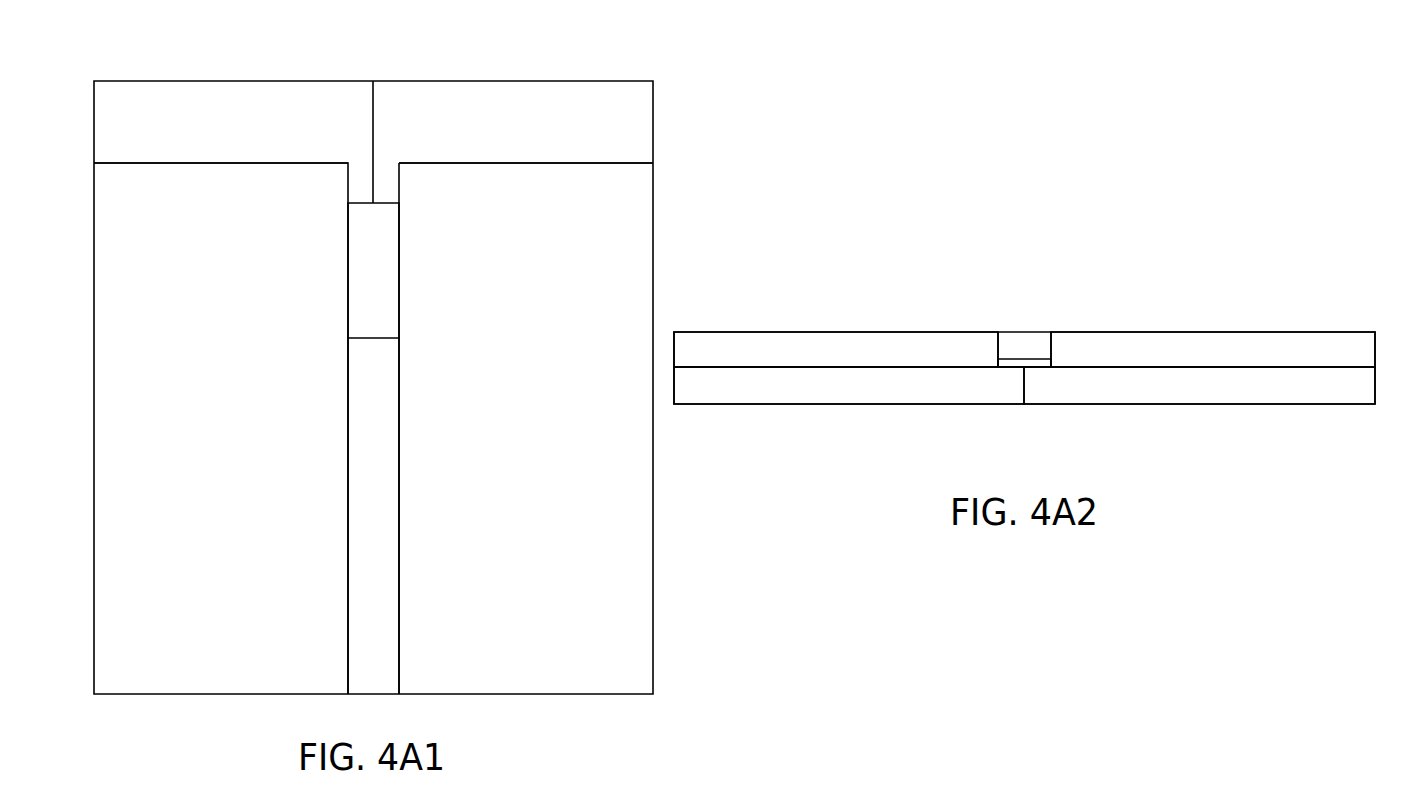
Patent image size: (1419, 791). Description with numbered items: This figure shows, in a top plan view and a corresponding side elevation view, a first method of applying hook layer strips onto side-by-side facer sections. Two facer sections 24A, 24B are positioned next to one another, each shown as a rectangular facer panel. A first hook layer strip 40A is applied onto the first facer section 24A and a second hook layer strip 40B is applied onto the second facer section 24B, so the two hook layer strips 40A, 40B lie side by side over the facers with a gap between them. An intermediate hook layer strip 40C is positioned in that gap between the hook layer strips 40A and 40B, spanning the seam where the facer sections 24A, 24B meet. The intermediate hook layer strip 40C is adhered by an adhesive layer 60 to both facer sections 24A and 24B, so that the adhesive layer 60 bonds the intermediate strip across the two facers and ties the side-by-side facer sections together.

In FIG. 4A1, the facer section 24A is at (265, 98).
In FIG. 4A2, the facer section 24A is at (910, 386).
In FIG. 4A1, the facer section 24B is at (482, 98).
In FIG. 4A2, the facer section 24B is at (1146, 386).
In FIG. 4A1, the hook layer strip 40A is at (171, 185).
In FIG. 4A2, the hook layer strip 40A is at (895, 348).
In FIG. 4A1, the hook layer strip 40B is at (635, 197).
In FIG. 4A2, the hook layer strip 40B is at (1263, 348).
In FIG. 4A1, the intermediate hook layer strip 40C is at (377, 465).
In FIG. 4A2, the intermediate hook layer strip 40C is at (1032, 348).
In FIG. 4A1, the adhesive layer 60 is at (377, 298).
In FIG. 4A2, the adhesive layer 60 is at (1013, 357).